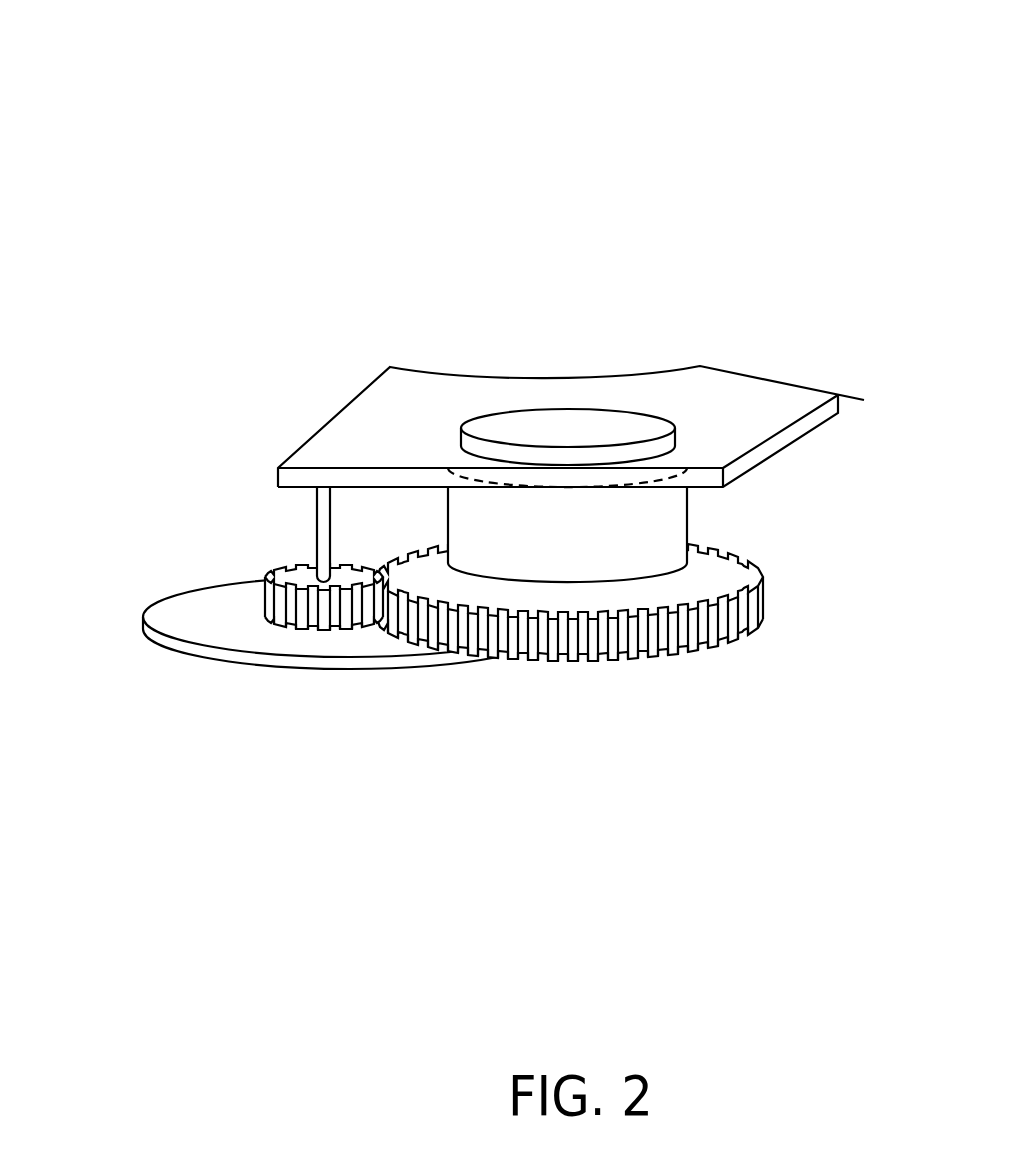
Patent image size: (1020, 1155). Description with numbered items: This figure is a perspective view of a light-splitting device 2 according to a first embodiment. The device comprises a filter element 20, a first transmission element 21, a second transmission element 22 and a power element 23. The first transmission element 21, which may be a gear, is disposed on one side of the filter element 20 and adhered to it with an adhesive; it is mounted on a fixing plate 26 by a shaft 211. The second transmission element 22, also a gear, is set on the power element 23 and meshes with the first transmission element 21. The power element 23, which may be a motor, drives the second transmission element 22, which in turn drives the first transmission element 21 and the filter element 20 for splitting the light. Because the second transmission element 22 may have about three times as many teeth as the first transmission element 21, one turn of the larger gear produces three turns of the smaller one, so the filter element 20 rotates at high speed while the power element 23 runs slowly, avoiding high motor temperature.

The light-splitting device 2 is at (461, 378).
The filter element 20 is at (223, 642).
The first transmission element 21 is at (270, 578).
The shaft 211 is at (320, 537).
The second transmission element 22 is at (735, 583).
The power element 23 is at (672, 522).
The fixing plate 26 is at (455, 398).